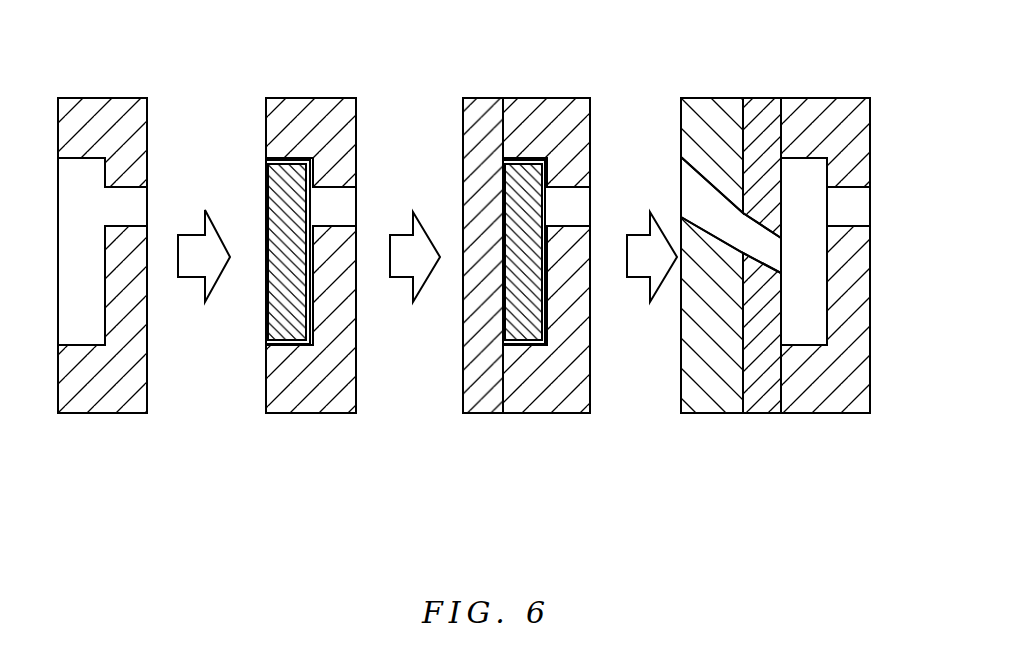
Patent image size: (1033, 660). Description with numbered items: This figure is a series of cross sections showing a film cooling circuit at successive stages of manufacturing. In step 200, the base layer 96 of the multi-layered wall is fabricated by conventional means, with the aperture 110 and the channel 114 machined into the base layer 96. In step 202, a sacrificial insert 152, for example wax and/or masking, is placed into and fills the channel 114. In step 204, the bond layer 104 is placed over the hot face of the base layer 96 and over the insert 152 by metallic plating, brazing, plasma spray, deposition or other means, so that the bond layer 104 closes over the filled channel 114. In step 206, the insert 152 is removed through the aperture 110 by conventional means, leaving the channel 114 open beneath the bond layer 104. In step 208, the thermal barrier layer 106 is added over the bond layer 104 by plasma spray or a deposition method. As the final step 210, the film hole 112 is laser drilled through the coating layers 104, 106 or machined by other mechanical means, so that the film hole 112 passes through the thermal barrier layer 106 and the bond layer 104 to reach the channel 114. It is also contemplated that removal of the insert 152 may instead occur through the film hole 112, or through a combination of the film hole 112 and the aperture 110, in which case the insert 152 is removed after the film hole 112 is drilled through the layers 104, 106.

The base layer 96 is at (125, 103).
The bond layer 104 is at (482, 107).
The thermal barrier layer 106 is at (708, 110).
The aperture 110 is at (850, 207).
The film hole 112 is at (707, 217).
The channel 114 is at (810, 173).
The sacrificial insert 152 is at (272, 205).
The step 200 is at (120, 437).
The step 202 is at (276, 437).
The step 204 is at (500, 437).
The step 206 is at (760, 316).
The step 208 is at (760, 316).
The final step 210 is at (712, 437).